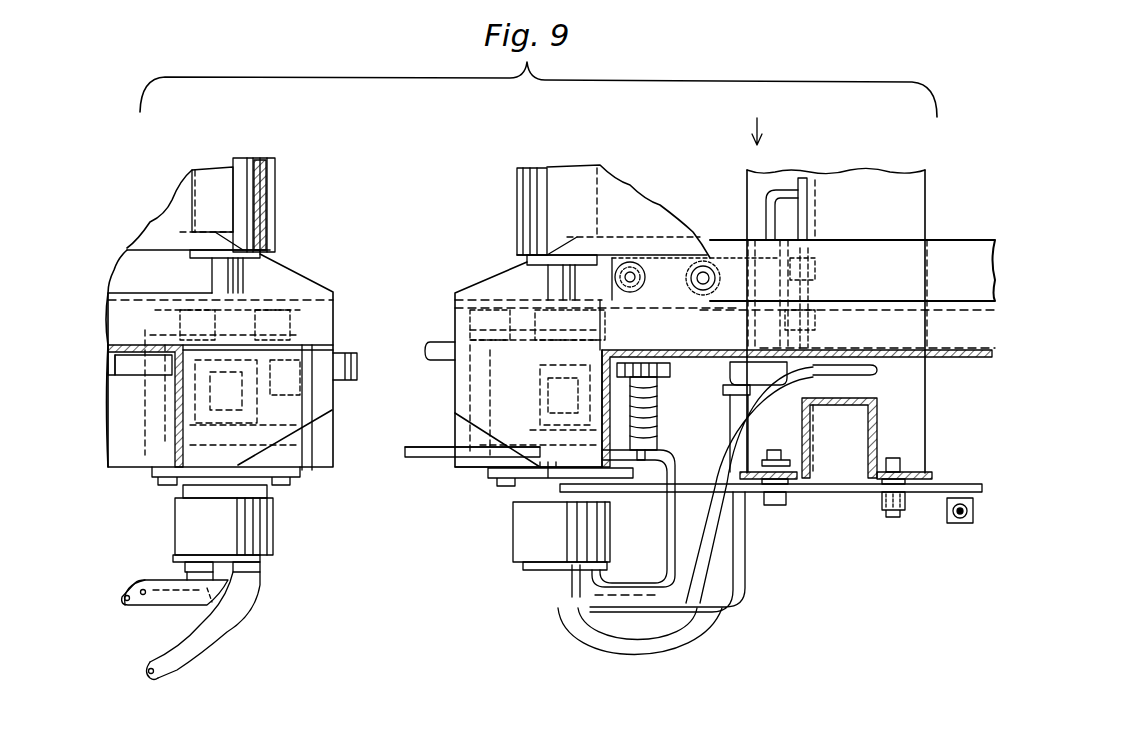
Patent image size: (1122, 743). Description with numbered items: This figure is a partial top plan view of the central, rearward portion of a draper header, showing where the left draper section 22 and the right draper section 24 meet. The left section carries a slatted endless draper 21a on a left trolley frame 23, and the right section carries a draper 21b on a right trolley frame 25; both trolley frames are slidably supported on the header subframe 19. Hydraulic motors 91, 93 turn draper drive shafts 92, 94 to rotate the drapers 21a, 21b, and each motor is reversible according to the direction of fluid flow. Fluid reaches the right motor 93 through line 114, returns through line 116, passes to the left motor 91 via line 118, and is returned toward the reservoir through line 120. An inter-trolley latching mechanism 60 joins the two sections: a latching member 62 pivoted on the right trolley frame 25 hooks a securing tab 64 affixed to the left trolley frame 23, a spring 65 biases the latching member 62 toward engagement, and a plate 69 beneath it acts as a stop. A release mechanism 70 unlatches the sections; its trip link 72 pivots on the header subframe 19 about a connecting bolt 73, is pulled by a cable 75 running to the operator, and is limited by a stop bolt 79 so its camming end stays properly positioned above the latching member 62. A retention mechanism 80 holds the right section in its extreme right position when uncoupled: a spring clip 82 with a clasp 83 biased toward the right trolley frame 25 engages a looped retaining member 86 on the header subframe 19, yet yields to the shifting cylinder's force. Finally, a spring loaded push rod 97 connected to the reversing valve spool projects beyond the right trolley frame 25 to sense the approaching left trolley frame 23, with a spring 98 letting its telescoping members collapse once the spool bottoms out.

The header subframe 19 is at (910, 422).
The slatted endless draper 21a is at (215, 180).
The slatted endless draper 21b is at (638, 205).
The left draper section 22 is at (276, 172).
The left trolley frame 23 is at (278, 268).
The right draper section 24 is at (603, 170).
The right trolley frame 25 is at (940, 240).
The inter-trolley latching mechanism 60 is at (477, 502).
The latching member 62 is at (435, 460).
The securing tab 64 is at (310, 482).
The spring 65 is at (660, 413).
The plate 69 is at (462, 490).
The release mechanism 70 is at (808, 584).
The trip link 72 is at (840, 492).
The connecting bolt 73 is at (778, 505).
The cable 75 is at (965, 525).
The stop bolt 79 is at (893, 517).
The retention mechanism 80 is at (762, 120).
The spring clip 82 is at (730, 240).
The clasp 83 is at (830, 255).
The looped retaining member 86 is at (782, 185).
The hydraulic motor 91 is at (273, 535).
The draper drive shaft 92 is at (212, 280).
The hydraulic motor 93 is at (515, 545).
The draper drive shaft 94 is at (548, 282).
The spring loaded push rod 97 is at (445, 345).
The spring 98 is at (520, 388).
The hydraulic line 114 is at (728, 605).
The hydraulic line 116 is at (540, 598).
The hydraulic line 118 is at (137, 578).
The hydraulic line 120 is at (252, 585).